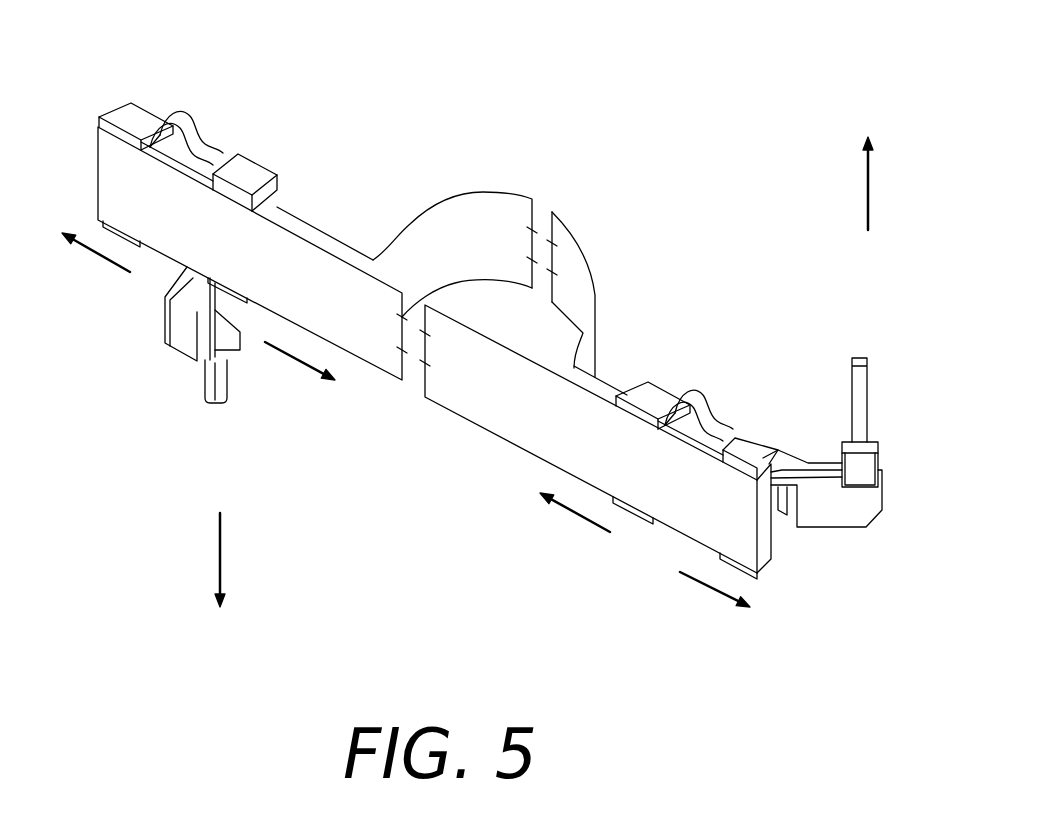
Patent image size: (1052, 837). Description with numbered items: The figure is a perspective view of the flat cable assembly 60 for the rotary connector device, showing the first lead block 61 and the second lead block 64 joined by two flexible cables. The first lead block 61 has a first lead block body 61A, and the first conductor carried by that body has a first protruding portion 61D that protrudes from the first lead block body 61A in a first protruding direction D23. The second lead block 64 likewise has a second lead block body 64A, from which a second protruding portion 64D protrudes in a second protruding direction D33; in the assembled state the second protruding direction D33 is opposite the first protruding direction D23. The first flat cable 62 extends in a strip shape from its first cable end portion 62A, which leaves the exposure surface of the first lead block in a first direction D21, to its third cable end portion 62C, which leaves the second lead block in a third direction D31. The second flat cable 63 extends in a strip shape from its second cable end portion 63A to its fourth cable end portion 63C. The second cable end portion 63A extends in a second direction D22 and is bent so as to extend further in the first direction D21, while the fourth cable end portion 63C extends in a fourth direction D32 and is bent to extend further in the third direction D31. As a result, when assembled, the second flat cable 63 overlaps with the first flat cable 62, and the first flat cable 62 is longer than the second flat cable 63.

The flat cable assembly 60 is at (556, 146).
The first lead block 61 is at (733, 398).
The first lead block body 61A is at (690, 406).
The first protruding portion 61D is at (860, 358).
The first flat cable 62 is at (573, 211).
The first cable end portion 62A is at (611, 378).
The third cable end portion 62C is at (308, 216).
The second flat cable 63 is at (465, 445).
The second cable end portion 63A is at (744, 470).
The fourth cable end portion 63C is at (108, 130).
The second lead block 64 is at (188, 102).
The second lead block body 64A is at (207, 147).
The second protruding portion 64D is at (212, 388).
The first direction D21 is at (568, 511).
The second direction D22 is at (712, 590).
The first protruding direction D23 is at (866, 180).
The third direction D31 is at (293, 362).
The fourth direction D32 is at (100, 254).
The second protruding direction D33 is at (223, 568).